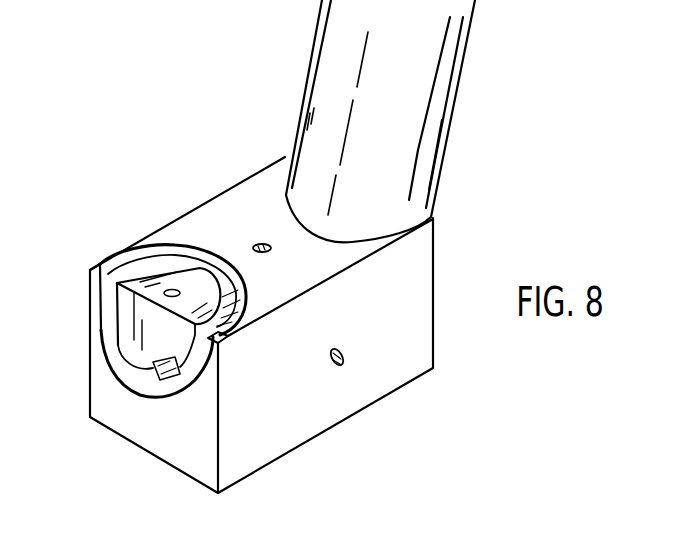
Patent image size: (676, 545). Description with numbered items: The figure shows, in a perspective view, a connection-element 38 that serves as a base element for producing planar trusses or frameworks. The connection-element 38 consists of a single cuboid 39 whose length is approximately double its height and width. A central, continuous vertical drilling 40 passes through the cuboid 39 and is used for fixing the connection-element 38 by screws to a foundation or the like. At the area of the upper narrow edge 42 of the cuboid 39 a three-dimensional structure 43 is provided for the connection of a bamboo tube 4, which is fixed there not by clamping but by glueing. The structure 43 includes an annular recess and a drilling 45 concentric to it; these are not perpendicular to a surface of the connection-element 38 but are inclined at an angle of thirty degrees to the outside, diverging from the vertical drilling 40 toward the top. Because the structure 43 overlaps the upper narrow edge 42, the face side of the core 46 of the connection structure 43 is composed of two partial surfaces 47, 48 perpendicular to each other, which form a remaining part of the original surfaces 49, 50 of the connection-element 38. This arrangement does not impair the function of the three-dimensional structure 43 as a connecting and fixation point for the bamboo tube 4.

The bamboo tube 4 is at (457, 37).
The connection-element 38 is at (440, 273).
The cuboid 39 is at (405, 373).
The vertical drilling 40 is at (261, 244).
The upper narrow edge 42 is at (433, 218).
The three-dimensional structure 43 is at (187, 238).
The drilling 45 is at (153, 267).
The core 46 is at (232, 337).
The partial surface 47 is at (158, 285).
The partial surface 48 is at (122, 305).
The original surface 49 is at (228, 198).
The original surface 50 is at (188, 462).